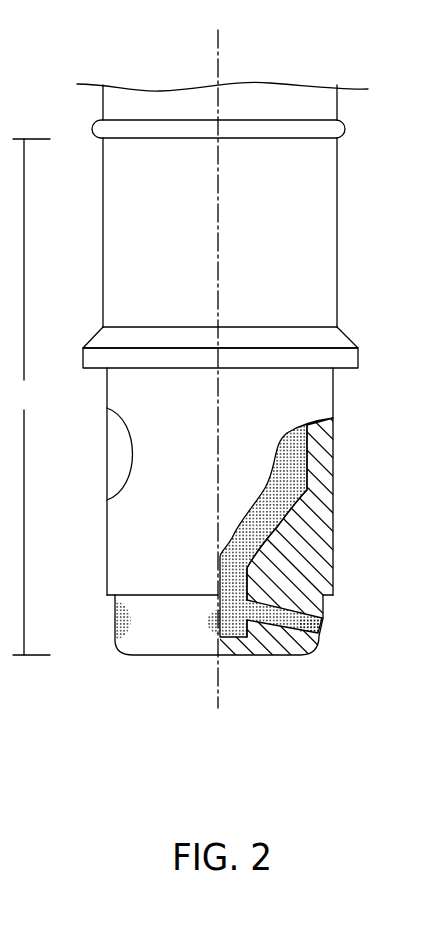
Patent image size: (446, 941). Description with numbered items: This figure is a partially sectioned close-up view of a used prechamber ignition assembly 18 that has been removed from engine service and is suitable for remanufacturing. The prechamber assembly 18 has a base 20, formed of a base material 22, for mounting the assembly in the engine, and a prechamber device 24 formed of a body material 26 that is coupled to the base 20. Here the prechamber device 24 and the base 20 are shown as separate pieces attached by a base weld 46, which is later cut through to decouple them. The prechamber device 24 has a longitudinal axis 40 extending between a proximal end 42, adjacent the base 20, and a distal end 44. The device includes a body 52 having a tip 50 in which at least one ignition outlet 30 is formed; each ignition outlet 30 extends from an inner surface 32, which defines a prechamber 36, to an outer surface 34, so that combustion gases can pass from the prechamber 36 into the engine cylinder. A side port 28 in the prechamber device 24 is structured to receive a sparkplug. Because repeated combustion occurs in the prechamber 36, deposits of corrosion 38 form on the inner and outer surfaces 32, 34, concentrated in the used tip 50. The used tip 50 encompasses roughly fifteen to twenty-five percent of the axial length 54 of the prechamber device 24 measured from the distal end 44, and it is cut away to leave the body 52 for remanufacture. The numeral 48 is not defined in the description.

The prechamber ignition assembly 18 is at (404, 76).
The base 20 is at (337, 102).
The base material 22 is at (287, 103).
The prechamber device 24 is at (337, 290).
The body material 26 is at (318, 392).
The side port 28 is at (115, 447).
The ignition outlet 30 is at (115, 627).
The inner surface 32 is at (308, 470).
The outer surface 34 is at (316, 407).
The prechamber 36 is at (305, 492).
The corrosion 38 is at (195, 630).
The longitudinal axis 40 is at (218, 51).
The proximal end 42 is at (91, 147).
The distal end 44 is at (325, 644).
The base weld 46 is at (345, 128).
The sidewall 48 is at (337, 150).
The tip 50 is at (140, 655).
The body 52 is at (107, 390).
The axial length 54 is at (31, 397).